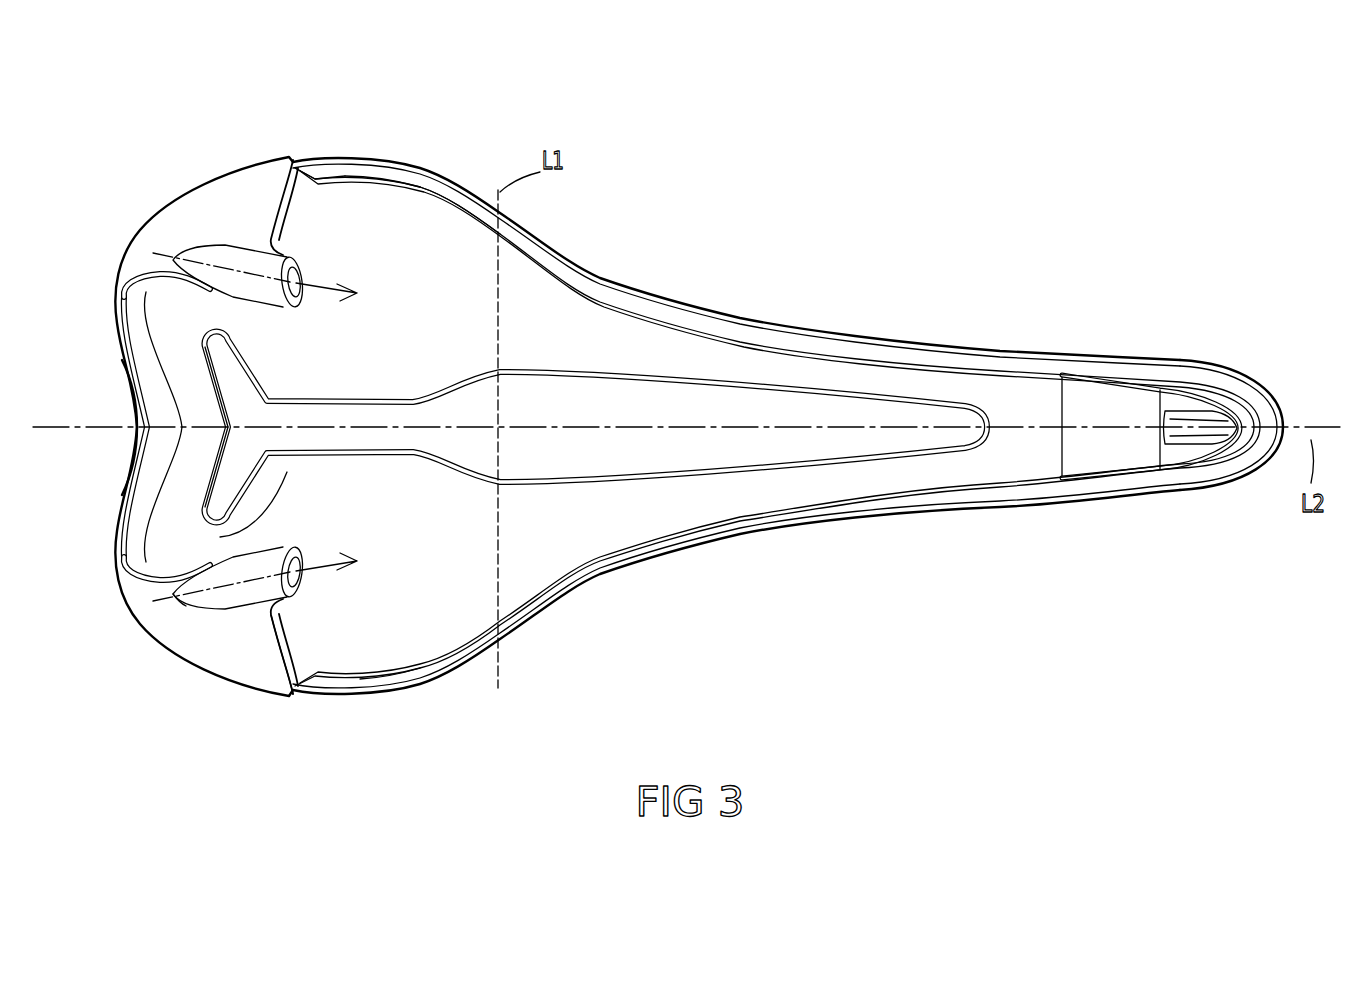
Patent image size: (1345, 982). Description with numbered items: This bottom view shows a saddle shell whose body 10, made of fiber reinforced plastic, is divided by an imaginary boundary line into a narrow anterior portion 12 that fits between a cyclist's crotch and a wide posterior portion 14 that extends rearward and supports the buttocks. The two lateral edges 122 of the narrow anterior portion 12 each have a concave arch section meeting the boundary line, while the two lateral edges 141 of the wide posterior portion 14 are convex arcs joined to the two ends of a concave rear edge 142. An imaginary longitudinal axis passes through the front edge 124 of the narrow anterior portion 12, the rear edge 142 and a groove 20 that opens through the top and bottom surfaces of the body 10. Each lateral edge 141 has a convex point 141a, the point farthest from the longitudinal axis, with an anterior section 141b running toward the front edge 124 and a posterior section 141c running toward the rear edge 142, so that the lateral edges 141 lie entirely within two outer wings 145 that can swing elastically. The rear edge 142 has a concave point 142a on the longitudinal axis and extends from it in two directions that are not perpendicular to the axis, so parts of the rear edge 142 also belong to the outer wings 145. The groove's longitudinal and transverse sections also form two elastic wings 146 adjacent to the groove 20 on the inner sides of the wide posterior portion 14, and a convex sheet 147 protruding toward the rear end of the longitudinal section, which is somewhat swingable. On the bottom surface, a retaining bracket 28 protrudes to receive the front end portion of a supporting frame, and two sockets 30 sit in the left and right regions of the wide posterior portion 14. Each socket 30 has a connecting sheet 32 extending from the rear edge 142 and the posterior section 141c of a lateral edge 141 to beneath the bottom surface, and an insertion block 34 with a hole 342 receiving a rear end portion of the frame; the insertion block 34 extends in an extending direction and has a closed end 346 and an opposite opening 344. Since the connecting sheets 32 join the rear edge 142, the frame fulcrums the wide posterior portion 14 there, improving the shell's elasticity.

The body 10 is at (1122, 155).
The narrow anterior portion 12 is at (962, 325).
The lateral edges 122 is at (608, 263).
The front edge 124 is at (1270, 392).
The wide posterior portion 14 is at (462, 170).
The lateral edges 141 is at (225, 60).
The convex point 141a is at (348, 157).
The anterior section 141b is at (423, 165).
The posterior section 141c is at (243, 165).
The rear edge 142 is at (112, 340).
The concave point 142a is at (137, 428).
The outer wings 145 is at (405, 643).
The elastic wings 146 is at (277, 390).
The convex sheet 147 is at (217, 433).
The groove 20 is at (720, 387).
The retaining bracket 28 is at (1107, 398).
The sockets 30 is at (196, 213).
The connecting sheet 32 is at (200, 630).
The insertion block 34 is at (270, 588).
The hole 342 is at (314, 268).
The opening 344 is at (276, 224).
The closed end 346 is at (173, 605).